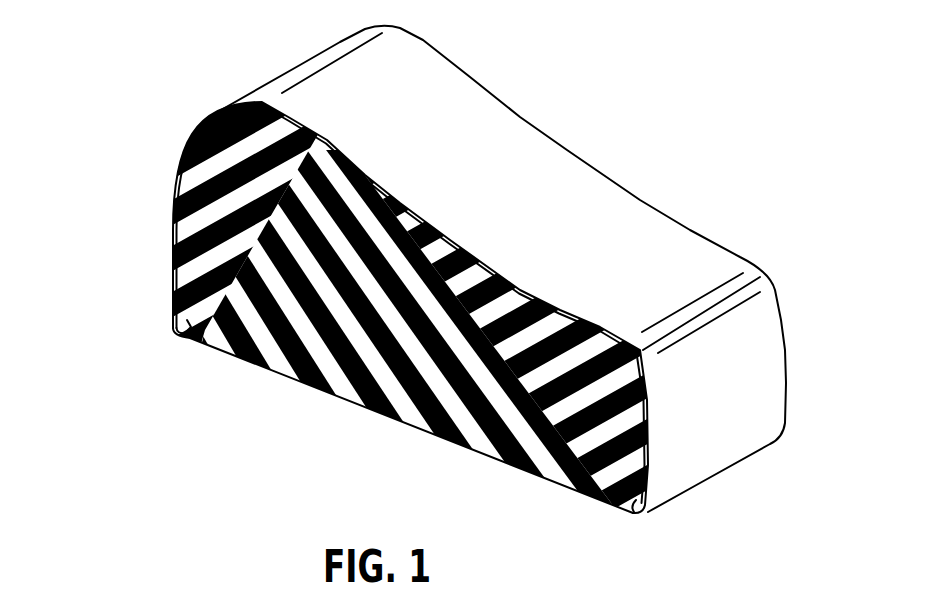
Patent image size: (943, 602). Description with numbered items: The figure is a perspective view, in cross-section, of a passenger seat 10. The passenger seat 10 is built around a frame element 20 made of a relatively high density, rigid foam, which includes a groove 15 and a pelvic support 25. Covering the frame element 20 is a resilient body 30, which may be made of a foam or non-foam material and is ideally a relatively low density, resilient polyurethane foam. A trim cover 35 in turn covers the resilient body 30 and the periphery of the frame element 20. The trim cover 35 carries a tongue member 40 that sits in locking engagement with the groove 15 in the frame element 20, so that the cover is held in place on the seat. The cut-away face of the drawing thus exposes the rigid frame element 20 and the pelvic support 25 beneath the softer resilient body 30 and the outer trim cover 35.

The passenger seat 10 is at (266, 47).
The groove 15 is at (197, 342).
The frame element 20 is at (403, 393).
The pelvic support 25 is at (176, 187).
The resilient body 30 is at (315, 177).
The trim cover 35 is at (292, 82).
The tongue member 40 is at (187, 320).